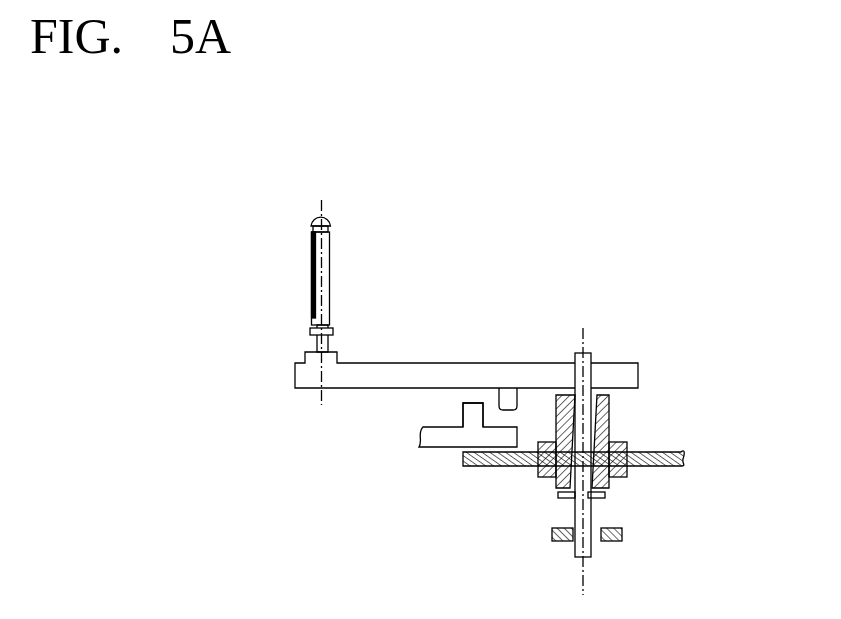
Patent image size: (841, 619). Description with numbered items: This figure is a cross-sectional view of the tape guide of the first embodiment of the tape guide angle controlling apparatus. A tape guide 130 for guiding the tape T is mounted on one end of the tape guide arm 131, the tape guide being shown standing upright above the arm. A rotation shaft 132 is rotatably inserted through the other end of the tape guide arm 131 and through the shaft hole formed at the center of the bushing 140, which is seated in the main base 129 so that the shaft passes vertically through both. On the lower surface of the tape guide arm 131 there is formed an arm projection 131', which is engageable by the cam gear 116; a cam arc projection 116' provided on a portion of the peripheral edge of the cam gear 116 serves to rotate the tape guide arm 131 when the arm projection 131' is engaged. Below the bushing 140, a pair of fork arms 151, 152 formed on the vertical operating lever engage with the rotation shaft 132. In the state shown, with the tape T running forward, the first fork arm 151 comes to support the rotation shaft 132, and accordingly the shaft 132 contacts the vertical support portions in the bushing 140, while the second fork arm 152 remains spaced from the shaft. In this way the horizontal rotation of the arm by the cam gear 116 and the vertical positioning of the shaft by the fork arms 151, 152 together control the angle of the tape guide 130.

The tape T is at (312, 248).
The tape guide 130 is at (329, 273).
The tape guide arm 131 is at (466, 345).
The arm projection 131' is at (525, 356).
The rotation shaft 132 is at (597, 360).
The bushing 140 is at (610, 417).
The main base 129 is at (667, 467).
The cam gear 116 is at (445, 445).
The cam arc projection 116' is at (417, 422).
The first fork arm 151 is at (552, 533).
The second fork arm 152 is at (617, 542).